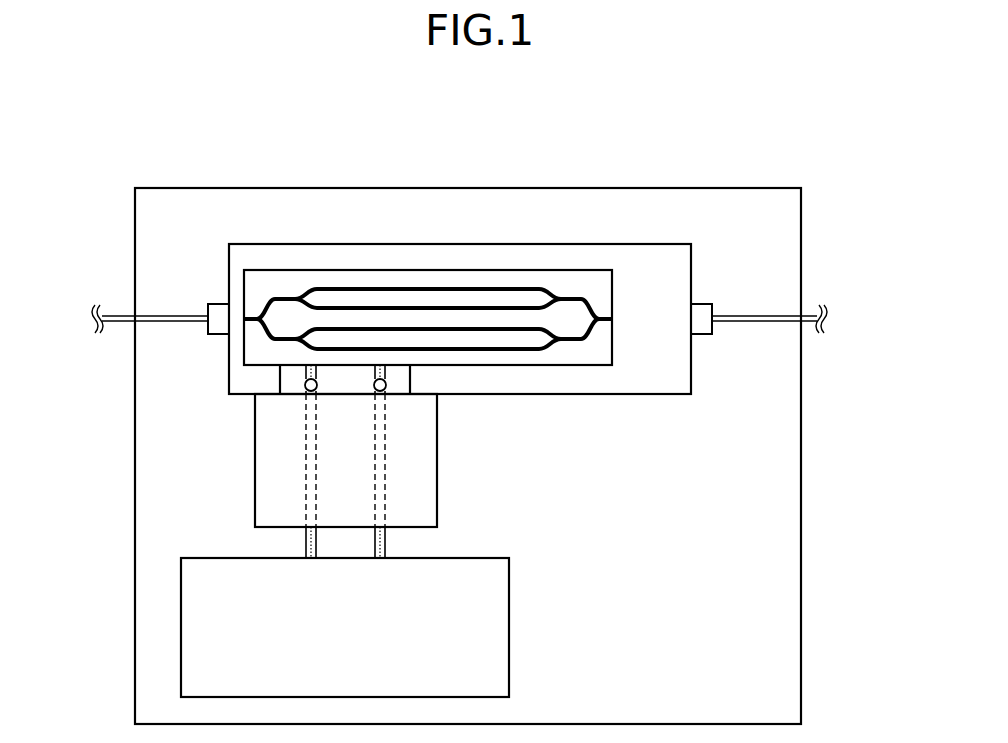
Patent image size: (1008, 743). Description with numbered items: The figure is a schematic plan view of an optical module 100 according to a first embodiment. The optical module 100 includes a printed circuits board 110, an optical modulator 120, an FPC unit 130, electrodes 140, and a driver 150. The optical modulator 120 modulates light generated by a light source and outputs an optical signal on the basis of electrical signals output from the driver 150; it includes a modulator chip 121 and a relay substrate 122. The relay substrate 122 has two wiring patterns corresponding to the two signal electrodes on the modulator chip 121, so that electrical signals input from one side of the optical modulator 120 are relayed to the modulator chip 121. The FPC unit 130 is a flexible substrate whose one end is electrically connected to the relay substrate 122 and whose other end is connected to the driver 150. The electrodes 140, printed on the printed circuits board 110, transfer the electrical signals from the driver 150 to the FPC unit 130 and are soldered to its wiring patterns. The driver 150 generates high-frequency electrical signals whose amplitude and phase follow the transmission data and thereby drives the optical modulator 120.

The optical module 100 is at (809, 147).
The printed circuits board 110 is at (734, 173).
The optical modulator 120 is at (636, 244).
The modulator chip 121 is at (612, 286).
The relay substrate 122 is at (410, 385).
The FPC unit 130 is at (437, 435).
The electrodes 140 is at (385, 557).
The driver 150 is at (509, 595).